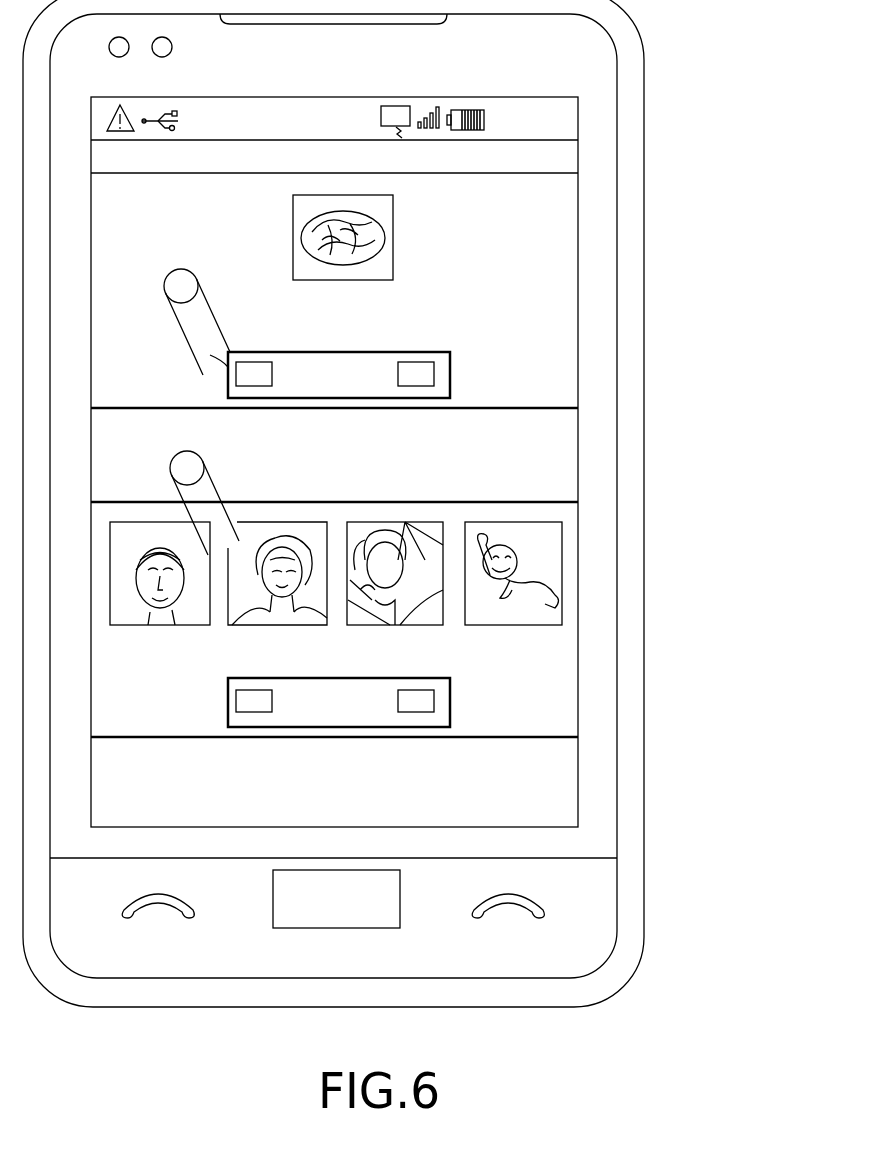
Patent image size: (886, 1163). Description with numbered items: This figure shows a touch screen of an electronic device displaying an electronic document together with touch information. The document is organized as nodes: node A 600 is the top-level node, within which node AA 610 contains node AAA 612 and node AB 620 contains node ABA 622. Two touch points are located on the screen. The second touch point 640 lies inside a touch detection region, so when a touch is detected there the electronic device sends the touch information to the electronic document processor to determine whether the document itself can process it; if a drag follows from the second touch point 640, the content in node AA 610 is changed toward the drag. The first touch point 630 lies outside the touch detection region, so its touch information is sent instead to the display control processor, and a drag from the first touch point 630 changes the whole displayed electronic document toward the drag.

The node A 600 is at (424, 462).
The node AA 610 is at (422, 297).
The node AAA 612 is at (452, 375).
The node AB 620 is at (424, 619).
The node ABA 622 is at (452, 700).
The first touch point 630 is at (205, 470).
The second touch point 640 is at (223, 400).